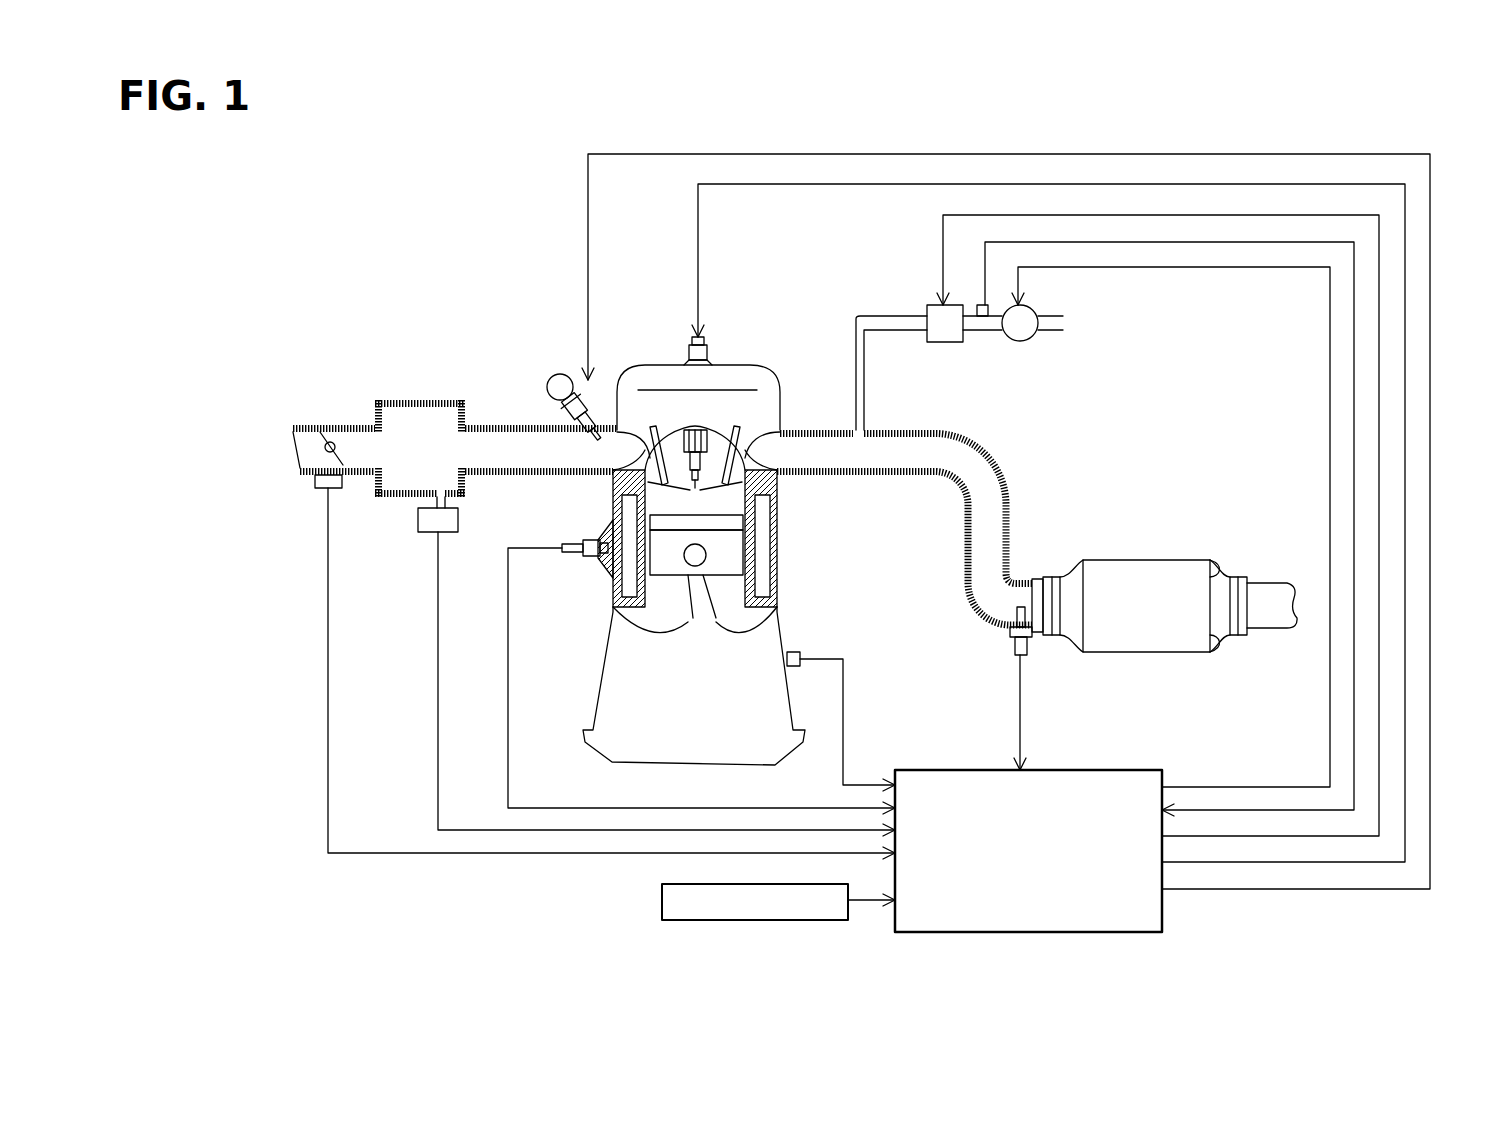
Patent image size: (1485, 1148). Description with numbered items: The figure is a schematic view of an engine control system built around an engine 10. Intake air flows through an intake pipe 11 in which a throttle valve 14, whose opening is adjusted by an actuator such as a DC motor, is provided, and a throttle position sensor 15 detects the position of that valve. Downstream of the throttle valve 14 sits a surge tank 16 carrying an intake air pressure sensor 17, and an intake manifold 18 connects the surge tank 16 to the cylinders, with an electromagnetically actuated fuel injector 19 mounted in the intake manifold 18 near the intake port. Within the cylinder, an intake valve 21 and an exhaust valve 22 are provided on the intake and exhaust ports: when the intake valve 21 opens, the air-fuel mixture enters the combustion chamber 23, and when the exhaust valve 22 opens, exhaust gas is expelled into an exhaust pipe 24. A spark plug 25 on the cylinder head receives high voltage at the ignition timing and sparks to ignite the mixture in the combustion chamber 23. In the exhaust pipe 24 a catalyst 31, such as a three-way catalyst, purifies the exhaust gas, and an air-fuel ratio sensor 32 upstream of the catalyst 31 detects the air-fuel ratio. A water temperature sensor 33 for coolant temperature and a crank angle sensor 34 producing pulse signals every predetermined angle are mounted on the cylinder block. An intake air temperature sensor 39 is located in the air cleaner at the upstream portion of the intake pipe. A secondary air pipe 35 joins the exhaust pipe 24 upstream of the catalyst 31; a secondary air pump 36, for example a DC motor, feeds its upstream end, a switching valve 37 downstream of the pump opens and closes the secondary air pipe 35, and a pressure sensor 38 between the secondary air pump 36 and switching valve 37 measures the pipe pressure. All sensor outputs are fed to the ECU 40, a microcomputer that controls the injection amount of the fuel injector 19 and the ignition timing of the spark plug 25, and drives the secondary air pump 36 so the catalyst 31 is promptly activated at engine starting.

The engine 10 is at (478, 236).
The intake pipe 11 is at (318, 425).
The throttle valve 14 is at (333, 430).
The throttle position sensor 15 is at (318, 489).
The surge tank 16 is at (418, 400).
The intake air pressure sensor 17 is at (432, 535).
The intake manifold 18 is at (547, 476).
The fuel injector 19 is at (566, 420).
The intake valve 21 is at (617, 472).
The exhaust valve 22 is at (782, 482).
The combustion chamber 23 is at (717, 503).
The exhaust pipe 24 is at (893, 430).
The spark plug 25 is at (713, 432).
The catalyst 31 is at (1110, 560).
The air-fuel ratio sensor 32 is at (1028, 655).
The water temperature sensor 33 is at (597, 560).
The crank angle sensor 34 is at (805, 655).
The secondary air pipe 35 is at (863, 366).
The secondary air pump 36 is at (1034, 340).
The switching valve 37 is at (948, 344).
The pressure sensor 38 is at (987, 318).
The intake air temperature sensor 39 is at (660, 900).
The ECU 40 is at (1098, 770).